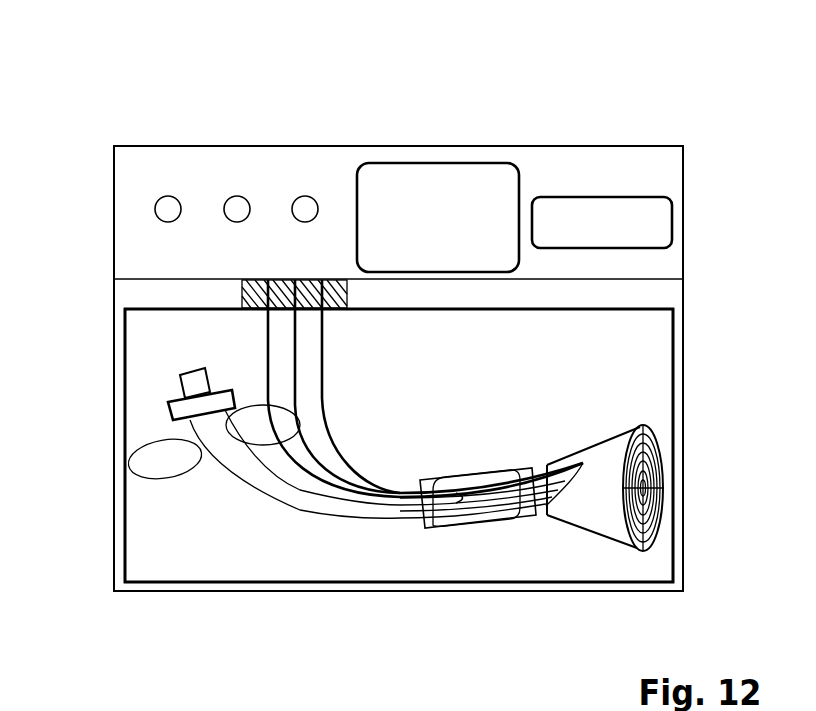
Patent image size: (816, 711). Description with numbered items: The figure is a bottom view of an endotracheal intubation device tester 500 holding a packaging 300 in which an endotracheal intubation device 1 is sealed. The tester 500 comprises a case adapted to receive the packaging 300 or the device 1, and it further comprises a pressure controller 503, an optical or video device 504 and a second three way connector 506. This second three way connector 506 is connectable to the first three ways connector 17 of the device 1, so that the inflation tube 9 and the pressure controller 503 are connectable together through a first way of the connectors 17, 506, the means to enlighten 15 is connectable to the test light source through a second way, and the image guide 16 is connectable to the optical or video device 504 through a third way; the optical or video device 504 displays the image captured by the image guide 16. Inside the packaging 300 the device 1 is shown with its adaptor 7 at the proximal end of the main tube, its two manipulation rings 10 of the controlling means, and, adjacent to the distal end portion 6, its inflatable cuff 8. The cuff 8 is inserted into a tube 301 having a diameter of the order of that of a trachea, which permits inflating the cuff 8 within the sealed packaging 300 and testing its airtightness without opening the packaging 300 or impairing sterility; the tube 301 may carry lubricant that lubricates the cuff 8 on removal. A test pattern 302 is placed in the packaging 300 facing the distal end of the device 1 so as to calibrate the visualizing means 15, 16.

The endotracheal intubation device tester 500 is at (694, 104).
The packaging 300 is at (124, 412).
The endotracheal intubation device 1 is at (209, 551).
The optical or video device 504 is at (447, 173).
The pressure controller 503 is at (623, 215).
The second three way connector 506 is at (281, 280).
The first three ways connector 17 is at (333, 280).
The image guide 16 is at (267, 323).
The means to enlighten 15 is at (290, 350).
The inflation tube 9 is at (322, 345).
The adaptor 7 is at (192, 380).
The cuff 8 is at (473, 520).
The manipulation rings 10 is at (145, 458).
The tube 301 is at (428, 530).
The distal end portion 6 is at (596, 438).
The test pattern 302 is at (648, 453).